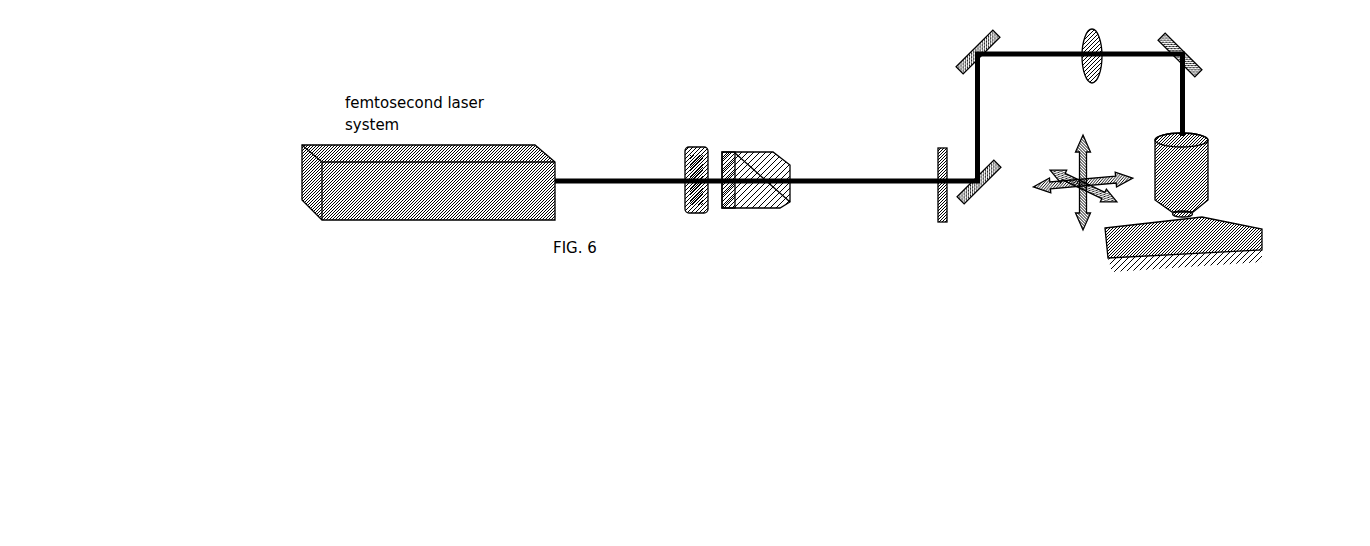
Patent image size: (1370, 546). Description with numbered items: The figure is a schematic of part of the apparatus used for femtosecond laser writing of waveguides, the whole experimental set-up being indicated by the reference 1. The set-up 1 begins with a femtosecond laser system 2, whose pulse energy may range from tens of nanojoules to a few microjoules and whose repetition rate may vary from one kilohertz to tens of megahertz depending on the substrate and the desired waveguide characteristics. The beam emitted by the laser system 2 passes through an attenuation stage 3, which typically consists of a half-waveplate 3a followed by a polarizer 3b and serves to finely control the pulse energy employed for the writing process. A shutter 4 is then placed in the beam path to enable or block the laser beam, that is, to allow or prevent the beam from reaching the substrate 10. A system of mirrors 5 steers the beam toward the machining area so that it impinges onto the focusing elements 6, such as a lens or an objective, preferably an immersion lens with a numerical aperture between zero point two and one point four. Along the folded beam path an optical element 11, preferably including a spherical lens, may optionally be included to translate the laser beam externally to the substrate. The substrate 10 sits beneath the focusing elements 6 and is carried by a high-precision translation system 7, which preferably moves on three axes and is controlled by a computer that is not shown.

The experimental set-up 1 is at (746, 74).
The femtosecond laser system 2 is at (430, 193).
The attenuation stage 3 is at (764, 200).
The half-waveplate 3a is at (700, 146).
The polarizer 3b is at (768, 149).
The shutter 4 is at (943, 190).
The system of mirrors 5 is at (1160, 38).
The focusing elements 6 is at (1190, 136).
The high-precision translation system 7 is at (1083, 195).
The substrate 10 is at (1195, 219).
The optical element 11 is at (1083, 50).